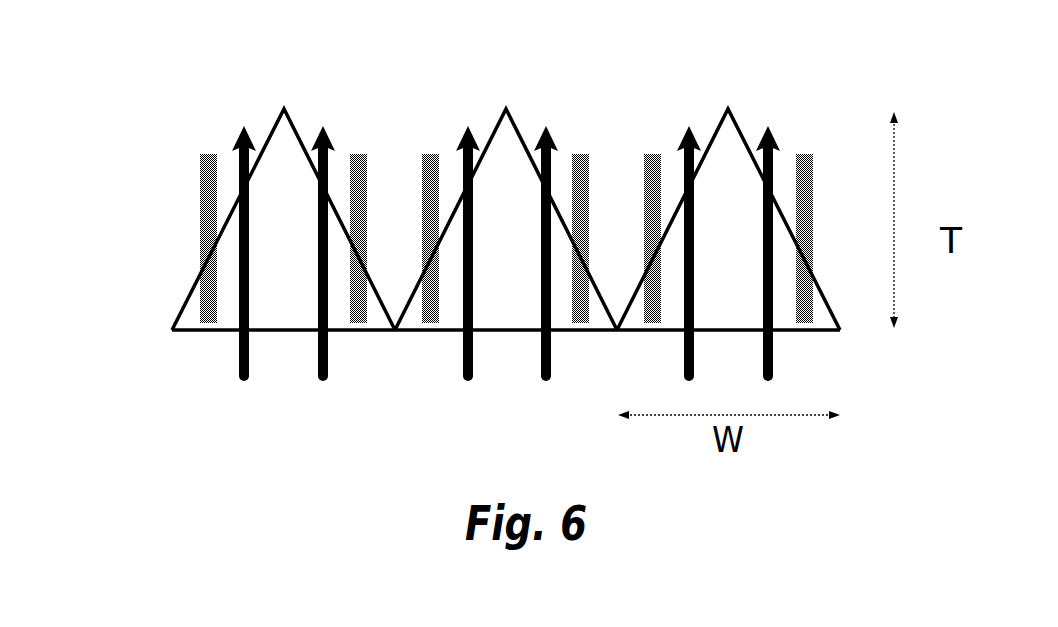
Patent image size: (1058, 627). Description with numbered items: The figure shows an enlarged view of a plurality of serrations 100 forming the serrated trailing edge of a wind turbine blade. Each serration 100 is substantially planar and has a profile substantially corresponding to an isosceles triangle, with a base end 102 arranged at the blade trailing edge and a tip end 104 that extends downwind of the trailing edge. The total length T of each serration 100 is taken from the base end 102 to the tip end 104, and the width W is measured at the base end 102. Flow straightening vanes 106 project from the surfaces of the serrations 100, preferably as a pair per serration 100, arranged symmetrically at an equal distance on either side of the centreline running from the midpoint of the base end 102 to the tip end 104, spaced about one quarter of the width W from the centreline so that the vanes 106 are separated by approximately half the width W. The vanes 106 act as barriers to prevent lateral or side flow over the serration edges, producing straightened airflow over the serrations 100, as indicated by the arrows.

The serrations 100 is at (480, 241).
The base end 102 is at (812, 356).
The tip end 104 is at (749, 85).
The flow straightening vanes 106 is at (422, 185).